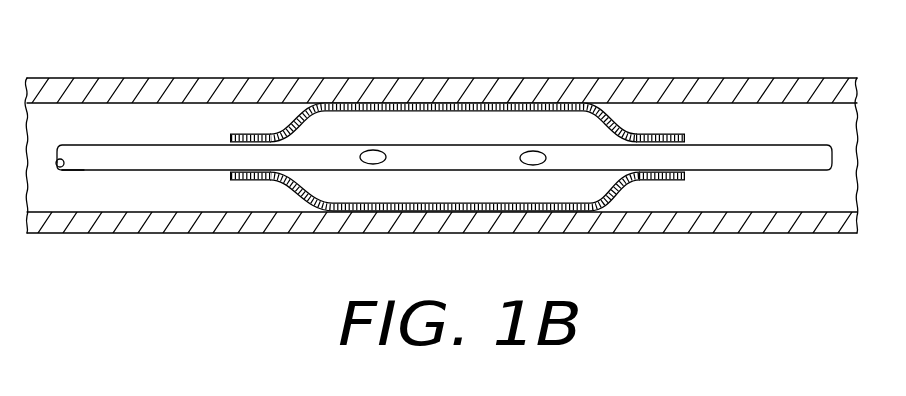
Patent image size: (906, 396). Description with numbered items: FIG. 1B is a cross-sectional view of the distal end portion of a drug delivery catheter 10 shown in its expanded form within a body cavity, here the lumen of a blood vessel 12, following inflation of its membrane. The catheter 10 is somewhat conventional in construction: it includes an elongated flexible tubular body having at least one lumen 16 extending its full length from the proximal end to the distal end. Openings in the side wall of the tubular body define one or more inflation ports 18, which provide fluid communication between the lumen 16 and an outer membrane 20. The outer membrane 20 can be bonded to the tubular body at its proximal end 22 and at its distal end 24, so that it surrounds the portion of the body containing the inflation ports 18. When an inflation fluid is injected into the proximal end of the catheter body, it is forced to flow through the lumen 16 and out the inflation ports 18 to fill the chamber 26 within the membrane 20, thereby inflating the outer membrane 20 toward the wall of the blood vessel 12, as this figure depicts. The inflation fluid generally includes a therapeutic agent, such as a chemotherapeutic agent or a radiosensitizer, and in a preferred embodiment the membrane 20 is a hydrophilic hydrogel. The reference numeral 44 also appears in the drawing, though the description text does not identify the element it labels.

The drug delivery catheter 10 is at (461, 56).
The blood vessel 12 is at (67, 122).
The lumen 16 is at (56, 162).
The inflation ports 18 is at (376, 152).
The outer membrane 20 is at (278, 123).
The proximal end 22 is at (258, 184).
The distal end 24 is at (643, 125).
The chamber 26 is at (480, 188).
The catheter shaft distal end 44 is at (83, 171).